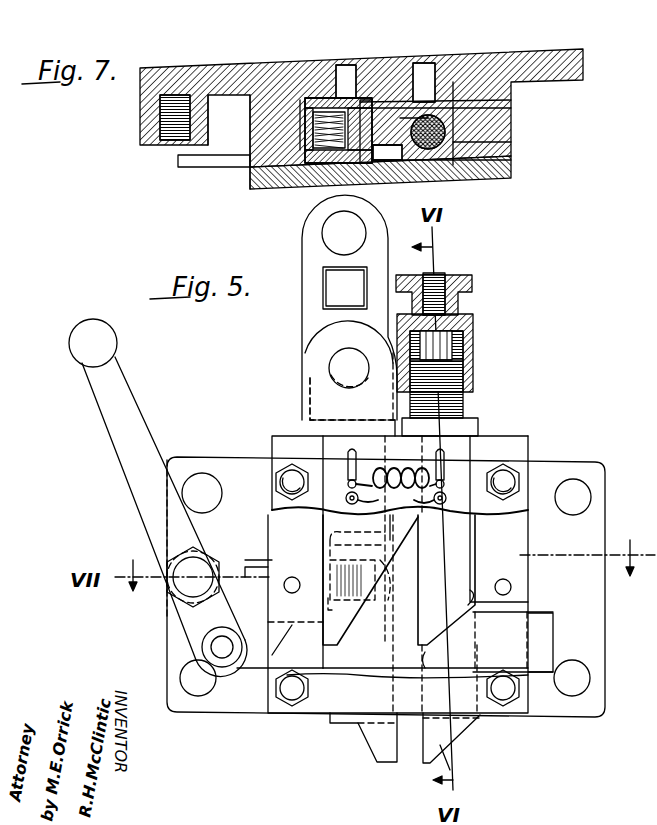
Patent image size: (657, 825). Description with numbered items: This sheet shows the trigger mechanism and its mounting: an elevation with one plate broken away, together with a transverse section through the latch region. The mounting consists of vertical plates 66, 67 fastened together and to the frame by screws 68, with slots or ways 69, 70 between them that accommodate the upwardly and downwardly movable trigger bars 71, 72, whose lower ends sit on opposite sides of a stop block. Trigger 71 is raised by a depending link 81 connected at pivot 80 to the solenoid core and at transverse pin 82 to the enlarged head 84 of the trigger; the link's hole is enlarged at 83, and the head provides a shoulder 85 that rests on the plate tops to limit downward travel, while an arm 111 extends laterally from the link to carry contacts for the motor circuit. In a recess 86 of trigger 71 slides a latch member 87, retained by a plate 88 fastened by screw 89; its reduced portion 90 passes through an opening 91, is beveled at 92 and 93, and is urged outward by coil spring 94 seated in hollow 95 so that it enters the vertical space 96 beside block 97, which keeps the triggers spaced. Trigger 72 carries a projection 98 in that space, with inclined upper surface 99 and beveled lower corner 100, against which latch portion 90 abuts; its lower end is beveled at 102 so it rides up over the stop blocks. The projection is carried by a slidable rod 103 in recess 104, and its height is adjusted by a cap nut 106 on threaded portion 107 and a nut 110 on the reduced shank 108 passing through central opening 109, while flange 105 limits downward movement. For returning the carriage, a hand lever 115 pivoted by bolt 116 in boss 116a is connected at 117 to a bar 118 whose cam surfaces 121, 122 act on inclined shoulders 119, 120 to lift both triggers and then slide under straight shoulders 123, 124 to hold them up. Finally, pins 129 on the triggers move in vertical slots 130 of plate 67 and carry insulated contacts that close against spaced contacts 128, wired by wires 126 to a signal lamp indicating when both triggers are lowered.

In FIG. 7, the vertical plate 66 is at (583, 62).
In FIG. 5, the vertical plate 66 is at (528, 532).
In FIG. 7, the vertical plate 67 is at (511, 168).
In FIG. 5, the vertical plate 67 is at (525, 441).
In FIG. 5, the screws 68 is at (278, 690).
In FIG. 7, the slot or way 69 is at (240, 163).
In FIG. 5, the slot or way 69 is at (318, 525).
In FIG. 7, the slot or way 70 is at (511, 98).
In FIG. 5, the slot or way 70 is at (470, 532).
In FIG. 7, the trigger member or bar 71 is at (346, 98).
In FIG. 5, the trigger member or bar 71 is at (375, 600).
In FIG. 7, the trigger member or bar 72 is at (470, 176).
In FIG. 5, the trigger member or bar 72 is at (460, 735).
In FIG. 5, the pivot 80 is at (344, 233).
In FIG. 5, the depending link 81 is at (302, 243).
In FIG. 5, the transverse pin 82 is at (340, 367).
In FIG. 5, the enlarged slot or hole 83 is at (330, 388).
In FIG. 5, the enlarged head 84 is at (333, 399).
In FIG. 5, the shoulder 85 is at (305, 427).
In FIG. 7, the recess 86 is at (300, 190).
In FIG. 7, the latch member 87 is at (325, 108).
In FIG. 7, the plate 88 is at (312, 130).
In FIG. 5, the plate 88 is at (330, 551).
In FIG. 5, the screw 89 is at (325, 605).
In FIG. 7, the reduced portion 90 is at (362, 110).
In FIG. 7, the opening 91 is at (412, 170).
In FIG. 5, the bevel 92 is at (371, 605).
In FIG. 5, the bevel 93 is at (352, 528).
In FIG. 7, the expansive coil spring 94 is at (300, 100).
In FIG. 5, the expansive coil spring 94 is at (283, 585).
In FIG. 7, the hollow 95 is at (365, 175).
In FIG. 5, the vertical space 96 is at (605, 520).
In FIG. 5, the block or member 97 is at (415, 442).
In FIG. 7, the projection 98 is at (420, 70).
In FIG. 5, the projection 98 is at (470, 575).
In FIG. 5, the beveled upper surface 99 is at (470, 554).
In FIG. 5, the beveled lower corner 100 is at (405, 580).
In FIG. 5, the beveled surface 102 is at (475, 752).
In FIG. 7, the vertically slidable rod 103 is at (511, 118).
In FIG. 5, the vertically slidable rod 103 is at (452, 340).
In FIG. 7, the recess 104 is at (511, 143).
In FIG. 5, the laterally extending flange 105 is at (478, 420).
In FIG. 5, the cap nut 106 is at (463, 361).
In FIG. 5, the screw-threaded portion 107 is at (463, 383).
In FIG. 5, the reduced shank 108 is at (440, 272).
In FIG. 5, the central opening 109 is at (473, 320).
In FIG. 5, the nut 110 is at (472, 283).
In FIG. 5, the arm 111 is at (340, 300).
In FIG. 5, the hand lever 115 is at (98, 403).
In FIG. 5, the transverse bolt 116 is at (172, 562).
In FIG. 7, the boss 116a is at (140, 120).
In FIG. 5, the boss 116a is at (170, 600).
In FIG. 5, the pivot 117 is at (202, 645).
In FIG. 7, the trigger-elevating bar 118 is at (200, 165).
In FIG. 5, the trigger-elevating bar 118 is at (492, 623).
In FIG. 5, the inclined shoulder 119 is at (295, 633).
In FIG. 5, the inclined shoulder 120 is at (528, 603).
In FIG. 5, the cam surface 121 is at (345, 662).
In FIG. 5, the cam surface 122 is at (462, 625).
In FIG. 5, the straight shoulder 123 is at (330, 642).
In FIG. 5, the straight shoulder 124 is at (440, 662).
In FIG. 5, the wires 126 is at (262, 510).
In FIG. 5, the spaced contacts 128 is at (277, 502).
In FIG. 5, the pin 129 is at (541, 455).
In FIG. 5, the vertical slots 130 is at (322, 451).